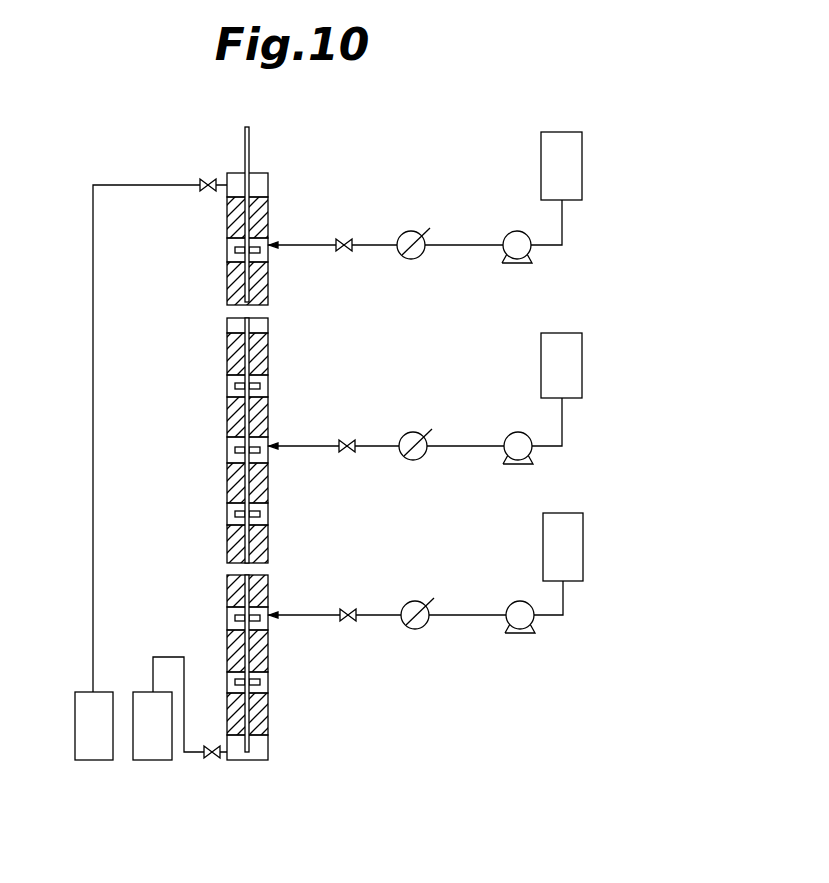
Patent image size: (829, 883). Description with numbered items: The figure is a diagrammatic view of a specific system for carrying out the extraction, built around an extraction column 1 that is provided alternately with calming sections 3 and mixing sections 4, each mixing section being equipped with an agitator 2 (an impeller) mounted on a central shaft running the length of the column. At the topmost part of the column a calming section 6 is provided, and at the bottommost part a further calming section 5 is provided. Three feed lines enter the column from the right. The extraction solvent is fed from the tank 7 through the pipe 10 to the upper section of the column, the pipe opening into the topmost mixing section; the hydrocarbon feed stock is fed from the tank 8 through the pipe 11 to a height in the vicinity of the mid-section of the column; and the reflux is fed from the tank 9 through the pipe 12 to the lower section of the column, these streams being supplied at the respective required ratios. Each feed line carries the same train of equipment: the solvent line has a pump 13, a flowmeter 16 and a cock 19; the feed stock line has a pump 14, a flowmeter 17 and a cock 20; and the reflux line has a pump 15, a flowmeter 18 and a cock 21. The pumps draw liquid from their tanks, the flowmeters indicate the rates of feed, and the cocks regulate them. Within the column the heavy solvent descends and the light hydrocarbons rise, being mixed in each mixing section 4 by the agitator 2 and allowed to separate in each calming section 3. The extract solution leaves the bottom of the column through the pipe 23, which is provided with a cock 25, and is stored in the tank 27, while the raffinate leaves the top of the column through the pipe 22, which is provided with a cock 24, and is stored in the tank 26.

The extraction column 1 is at (242, 440).
The agitator 2 is at (230, 448).
The calming section 3 is at (242, 216).
The mixing section 4 is at (230, 246).
The calming section 5 is at (262, 747).
The calming section 6 is at (261, 181).
The tank 7 is at (576, 144).
The tank 8 is at (576, 343).
The tank 9 is at (576, 525).
The pipe 10 is at (563, 235).
The pipe 11 is at (563, 428).
The feed pipe 12 is at (565, 605).
The pump 13 is at (512, 233).
The pump 14 is at (512, 433).
The pump 15 is at (515, 601).
The flowmeter 16 is at (412, 231).
The flowmeter 17 is at (412, 432).
The flowmeter 18 is at (415, 601).
The cock 19 is at (344, 237).
The cock 20 is at (347, 438).
The cock 21 is at (348, 607).
The pipe 22 is at (88, 200).
The pipe 23 is at (181, 655).
The cock 24 is at (201, 181).
The cock 25 is at (212, 762).
The tank 26 is at (100, 757).
The tank 27 is at (157, 757).